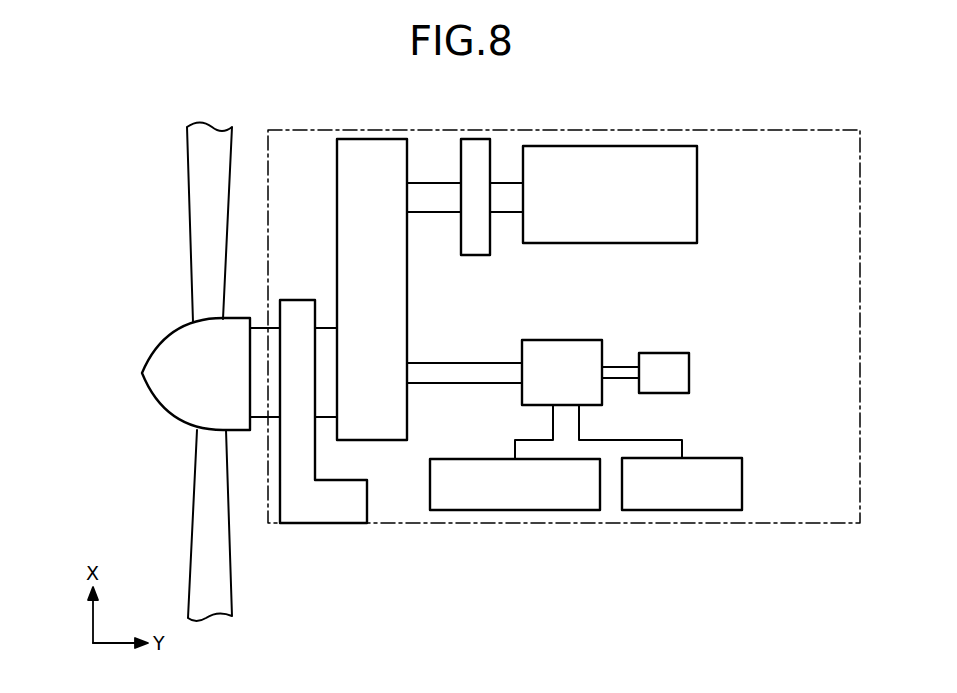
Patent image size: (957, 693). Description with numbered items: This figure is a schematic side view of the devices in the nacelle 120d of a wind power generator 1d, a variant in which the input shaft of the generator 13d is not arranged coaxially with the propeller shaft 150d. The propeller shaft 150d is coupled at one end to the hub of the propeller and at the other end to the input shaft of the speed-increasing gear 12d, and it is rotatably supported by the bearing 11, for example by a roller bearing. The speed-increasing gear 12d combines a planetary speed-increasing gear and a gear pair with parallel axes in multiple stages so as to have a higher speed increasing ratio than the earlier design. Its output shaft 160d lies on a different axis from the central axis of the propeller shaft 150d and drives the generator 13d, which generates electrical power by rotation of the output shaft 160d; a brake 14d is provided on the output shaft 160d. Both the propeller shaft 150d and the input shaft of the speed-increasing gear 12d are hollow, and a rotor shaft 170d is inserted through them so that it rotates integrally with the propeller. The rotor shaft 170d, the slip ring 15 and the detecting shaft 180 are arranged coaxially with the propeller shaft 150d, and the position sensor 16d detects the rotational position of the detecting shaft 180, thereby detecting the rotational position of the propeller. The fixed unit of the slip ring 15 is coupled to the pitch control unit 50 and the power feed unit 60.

The wind power generator 1d is at (820, 100).
The nacelle 120d is at (573, 130).
The speed-increasing gear 12d is at (336, 172).
The generator 13d is at (698, 194).
The output shaft 160d is at (437, 213).
The brake 14d is at (475, 256).
The rotor shaft 170d is at (459, 363).
The slip ring 15 is at (560, 340).
The detecting shaft 180 is at (619, 366).
The position sensor 16d is at (662, 353).
The propeller shaft 150d is at (258, 418).
The bearing 11 is at (322, 524).
The pitch control unit 50 is at (513, 511).
The power feed unit 60 is at (690, 511).